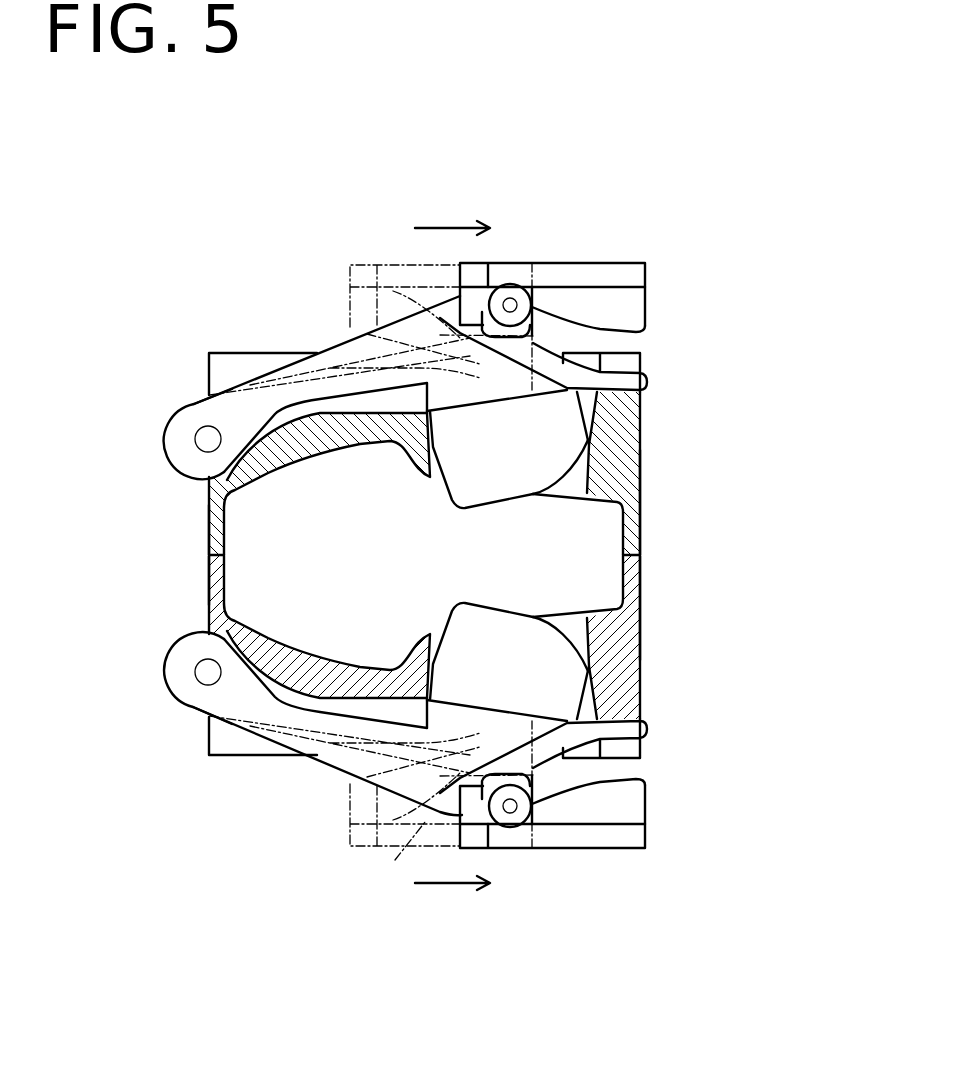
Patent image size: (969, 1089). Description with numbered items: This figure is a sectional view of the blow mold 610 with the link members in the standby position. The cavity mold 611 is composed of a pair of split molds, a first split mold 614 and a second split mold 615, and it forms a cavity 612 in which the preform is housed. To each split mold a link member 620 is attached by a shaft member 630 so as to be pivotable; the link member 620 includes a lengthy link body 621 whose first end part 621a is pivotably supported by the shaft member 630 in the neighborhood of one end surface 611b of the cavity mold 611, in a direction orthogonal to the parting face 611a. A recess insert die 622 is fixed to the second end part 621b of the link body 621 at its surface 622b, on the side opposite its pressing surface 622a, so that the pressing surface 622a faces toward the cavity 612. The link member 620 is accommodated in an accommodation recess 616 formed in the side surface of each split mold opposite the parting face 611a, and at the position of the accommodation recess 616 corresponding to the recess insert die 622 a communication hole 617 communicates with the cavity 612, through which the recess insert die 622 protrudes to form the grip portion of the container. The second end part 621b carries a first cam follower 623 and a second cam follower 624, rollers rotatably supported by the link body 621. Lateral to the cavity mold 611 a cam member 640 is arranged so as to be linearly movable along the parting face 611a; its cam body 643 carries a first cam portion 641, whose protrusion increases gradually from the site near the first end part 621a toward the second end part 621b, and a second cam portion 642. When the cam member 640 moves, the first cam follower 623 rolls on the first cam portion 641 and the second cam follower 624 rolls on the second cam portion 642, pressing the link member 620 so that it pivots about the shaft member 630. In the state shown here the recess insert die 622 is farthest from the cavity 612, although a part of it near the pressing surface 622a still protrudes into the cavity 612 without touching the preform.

The blow mold 610 is at (695, 142).
The cavity mold 611 is at (725, 498).
The parting face 611a is at (210, 552).
The end surface 611b is at (196, 578).
The cavity 612 is at (383, 457).
The first split mold 614 is at (604, 490).
The second split mold 615 is at (630, 577).
The accommodation recess 616 is at (247, 367).
The communication hole 617 is at (585, 462).
The link member 620 is at (334, 320).
The link body 621 is at (317, 363).
The first end part 621a is at (189, 388).
The second end part 621b is at (431, 281).
The recess insert die 622 is at (580, 412).
The pressing surface 622a is at (506, 512).
The surface 622b is at (558, 377).
The first cam follower 623 is at (415, 830).
The second cam follower 624 is at (513, 300).
The shaft member 630 is at (205, 440).
The cam member 640 is at (645, 241).
The first cam portion 641 is at (630, 302).
The second cam portion 642 is at (650, 377).
The cam body 643 is at (583, 277).